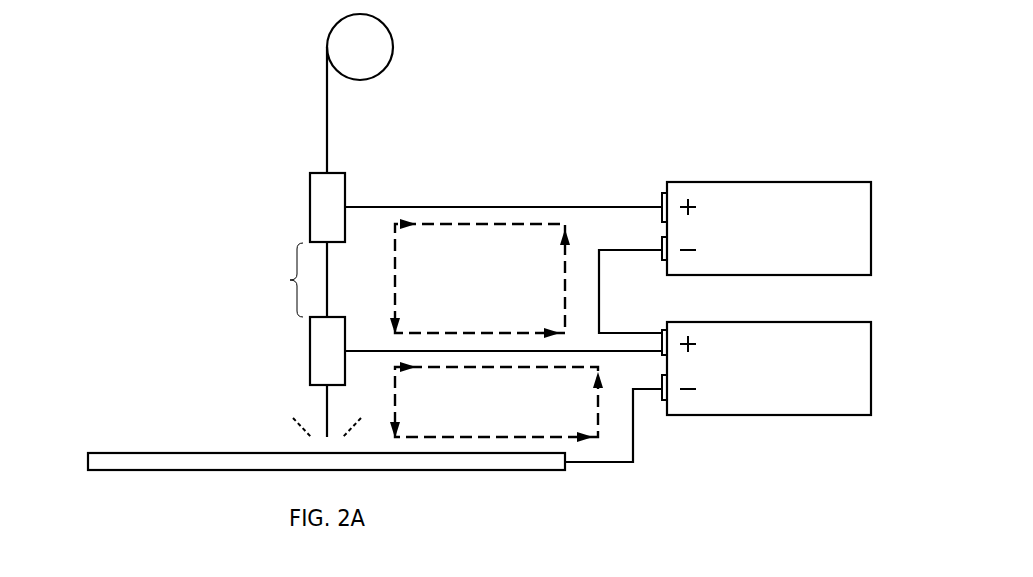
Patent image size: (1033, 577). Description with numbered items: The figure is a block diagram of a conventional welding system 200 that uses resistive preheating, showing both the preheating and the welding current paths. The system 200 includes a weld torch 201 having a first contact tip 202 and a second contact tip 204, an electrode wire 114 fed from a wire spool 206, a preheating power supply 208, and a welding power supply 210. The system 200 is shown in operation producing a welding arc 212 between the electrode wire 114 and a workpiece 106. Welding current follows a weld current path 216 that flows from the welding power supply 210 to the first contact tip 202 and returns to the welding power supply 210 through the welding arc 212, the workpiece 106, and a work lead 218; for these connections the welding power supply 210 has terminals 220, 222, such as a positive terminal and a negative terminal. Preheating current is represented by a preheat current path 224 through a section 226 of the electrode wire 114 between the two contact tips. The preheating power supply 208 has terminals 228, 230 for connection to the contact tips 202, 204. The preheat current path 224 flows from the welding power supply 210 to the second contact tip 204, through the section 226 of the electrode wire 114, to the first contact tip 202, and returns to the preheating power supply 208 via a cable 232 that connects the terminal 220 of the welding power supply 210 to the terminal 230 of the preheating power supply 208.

The welding system 200 is at (100, 20).
The weld torch 201 is at (244, 131).
The wire spool 206 is at (381, 27).
The electrode wire 114 is at (327, 410).
The second contact tip 204 is at (310, 173).
The first contact tip 202 is at (310, 345).
The section of the electrode wire 226 is at (280, 291).
The welding arc 212 is at (297, 426).
The workpiece 106 is at (88, 470).
The preheat current path 224 is at (505, 333).
The weld current path 216 is at (532, 437).
The preheating power supply 208 is at (871, 182).
The terminal of the preheating power supply 228 is at (663, 193).
The terminal of the preheating power supply 230 is at (663, 261).
The cable 232 is at (639, 249).
The welding power supply 210 is at (871, 322).
The terminal of the welding power supply 220 is at (663, 330).
The terminal of the welding power supply 222 is at (663, 401).
The work lead 218 is at (634, 463).